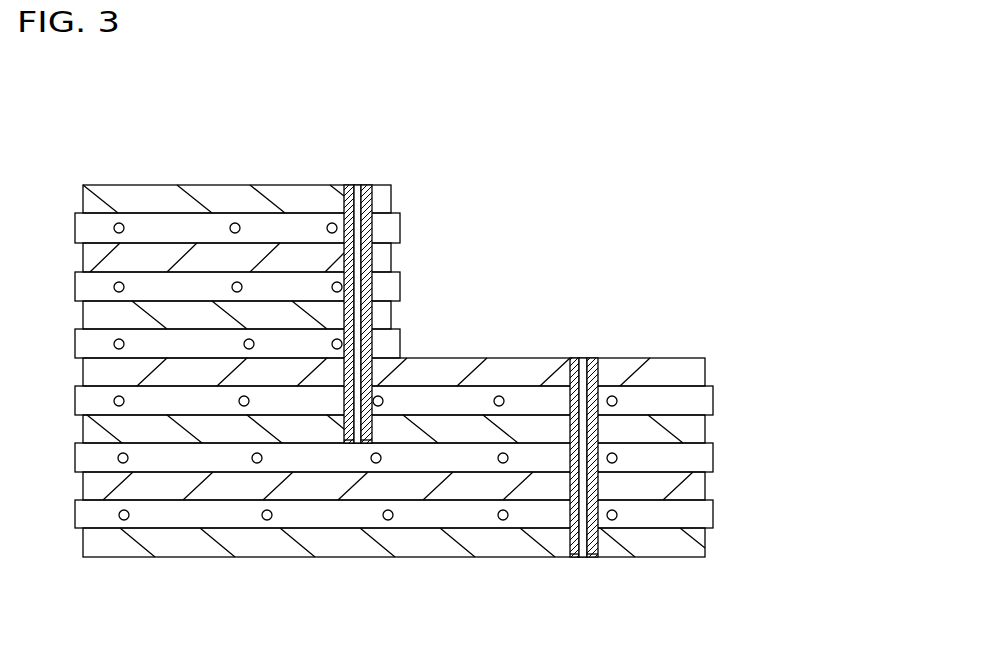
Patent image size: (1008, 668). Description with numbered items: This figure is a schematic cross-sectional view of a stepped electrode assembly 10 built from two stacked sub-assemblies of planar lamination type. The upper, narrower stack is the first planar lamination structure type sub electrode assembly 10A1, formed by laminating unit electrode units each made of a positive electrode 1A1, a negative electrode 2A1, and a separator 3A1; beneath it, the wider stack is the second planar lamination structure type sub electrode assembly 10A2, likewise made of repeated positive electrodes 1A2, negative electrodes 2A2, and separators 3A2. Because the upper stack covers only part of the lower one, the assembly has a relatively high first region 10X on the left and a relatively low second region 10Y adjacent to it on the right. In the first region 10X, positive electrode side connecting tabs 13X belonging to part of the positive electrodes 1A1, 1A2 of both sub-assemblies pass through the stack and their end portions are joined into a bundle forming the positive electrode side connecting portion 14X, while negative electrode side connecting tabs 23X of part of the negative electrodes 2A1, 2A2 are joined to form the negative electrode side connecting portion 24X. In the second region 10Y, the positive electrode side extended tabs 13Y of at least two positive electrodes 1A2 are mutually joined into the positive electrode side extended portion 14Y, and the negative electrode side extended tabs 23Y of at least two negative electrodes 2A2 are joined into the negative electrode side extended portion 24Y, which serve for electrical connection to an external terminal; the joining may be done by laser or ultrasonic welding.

The electrode assembly 10 is at (490, 385).
The first planar lamination structure type sub electrode assembly 10A1 is at (331, 268).
The second planar lamination structure type sub electrode assembly 10A2 is at (490, 455).
The positive electrode 1A1 is at (391, 198).
The negative electrode 2A1 is at (391, 258).
The separator 3A1 is at (400, 229).
The positive electrode 1A2 is at (704, 431).
The negative electrode 2A2 is at (704, 372).
The separator 3A2 is at (712, 401).
The first region 10X is at (398, 563).
The second region 10Y is at (705, 563).
The positive electrode side connecting tab 13X is at (362, 215).
The negative electrode side connecting tab 23X is at (347, 257).
The positive electrode side connecting portion 14X is at (372, 443).
The negative electrode side connecting portion 24X is at (344, 443).
The positive electrode side extended tab 13Y is at (592, 432).
The negative electrode side extended tab 23Y is at (574, 372).
The positive electrode side extended portion 14Y is at (596, 557).
The negative electrode side extended portion 24Y is at (572, 557).